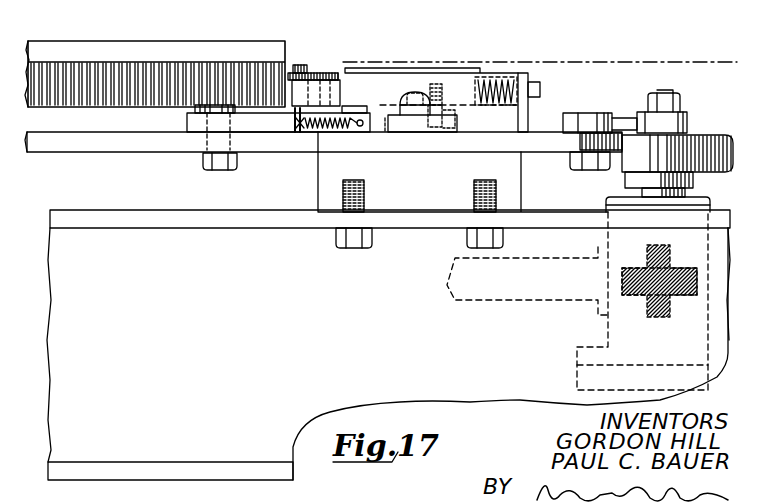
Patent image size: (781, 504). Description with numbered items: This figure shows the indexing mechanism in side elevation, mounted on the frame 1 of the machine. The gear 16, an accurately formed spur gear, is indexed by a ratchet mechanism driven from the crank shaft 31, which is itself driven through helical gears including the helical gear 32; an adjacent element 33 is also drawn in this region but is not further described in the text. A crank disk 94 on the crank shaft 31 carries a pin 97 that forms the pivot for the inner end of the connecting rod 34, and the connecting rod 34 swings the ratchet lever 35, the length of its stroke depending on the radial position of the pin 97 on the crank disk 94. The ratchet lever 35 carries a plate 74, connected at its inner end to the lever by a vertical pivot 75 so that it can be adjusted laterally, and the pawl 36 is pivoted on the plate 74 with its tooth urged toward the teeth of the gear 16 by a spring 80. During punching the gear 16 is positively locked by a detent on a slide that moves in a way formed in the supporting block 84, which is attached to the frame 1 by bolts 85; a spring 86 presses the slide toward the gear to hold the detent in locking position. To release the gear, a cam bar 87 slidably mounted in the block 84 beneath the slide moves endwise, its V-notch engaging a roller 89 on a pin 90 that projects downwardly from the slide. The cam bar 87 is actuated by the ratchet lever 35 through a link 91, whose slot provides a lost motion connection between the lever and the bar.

The frame 1 is at (95, 223).
The gear 16 is at (82, 68).
The crank shaft 31 is at (690, 193).
The helical gear 32 is at (660, 249).
The cross slot arm 33 is at (680, 297).
The connecting rod 34 is at (606, 113).
The ratchet lever 35 is at (135, 142).
The pawl 36 is at (340, 92).
The plate 74 is at (280, 125).
The vertical pivot 75 is at (232, 172).
The spring 80 is at (333, 128).
The supporting block 84 is at (428, 202).
The bolts 85 is at (352, 250).
The spring 86 is at (500, 95).
The cam bar 87 is at (385, 132).
The roller 89 is at (452, 112).
The pin 90 is at (447, 122).
The link 91 is at (406, 126).
The crank disk 94 is at (723, 135).
The pin 97 is at (668, 92).